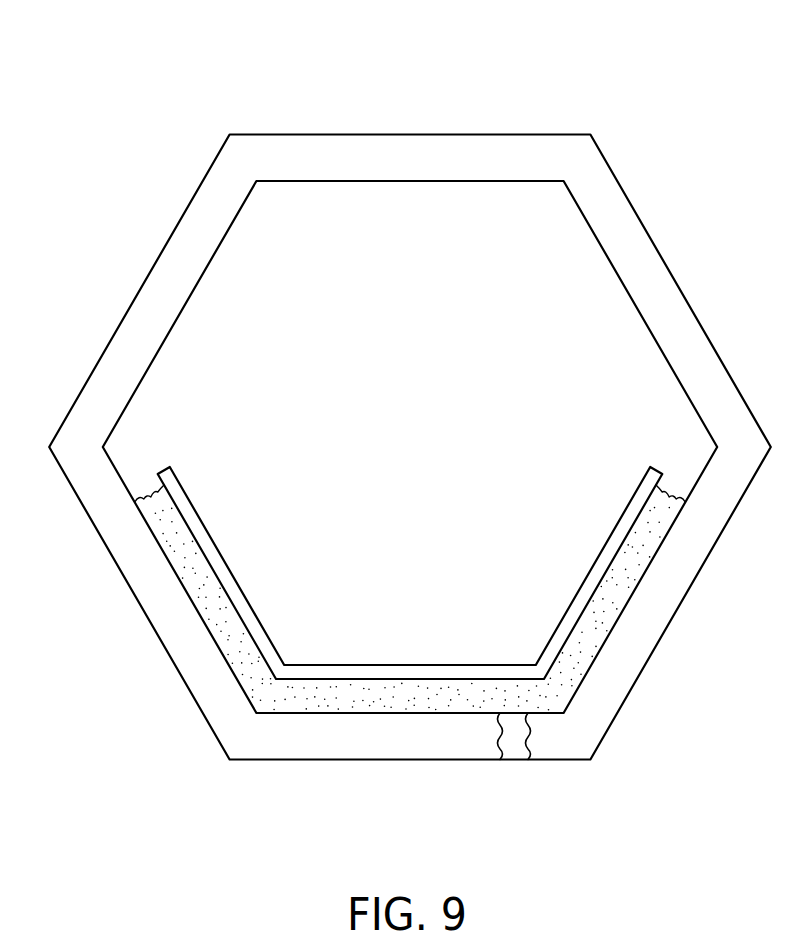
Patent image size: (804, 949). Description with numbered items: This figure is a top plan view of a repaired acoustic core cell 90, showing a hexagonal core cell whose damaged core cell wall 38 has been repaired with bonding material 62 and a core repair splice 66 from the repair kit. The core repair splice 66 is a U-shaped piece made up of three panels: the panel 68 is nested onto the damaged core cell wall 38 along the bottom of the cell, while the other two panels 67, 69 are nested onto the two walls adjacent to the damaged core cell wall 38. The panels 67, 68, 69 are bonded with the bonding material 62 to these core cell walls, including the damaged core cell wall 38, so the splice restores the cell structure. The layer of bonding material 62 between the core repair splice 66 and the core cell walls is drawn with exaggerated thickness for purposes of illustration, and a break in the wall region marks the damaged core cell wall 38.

The repaired acoustic core cell 90 is at (685, 118).
The damaged core cell wall 38 is at (510, 758).
The bonding material 62 is at (168, 538).
The core repair splice 66 is at (224, 557).
The panel 67 is at (232, 602).
The panel 68 is at (388, 679).
The panel 69 is at (592, 602).